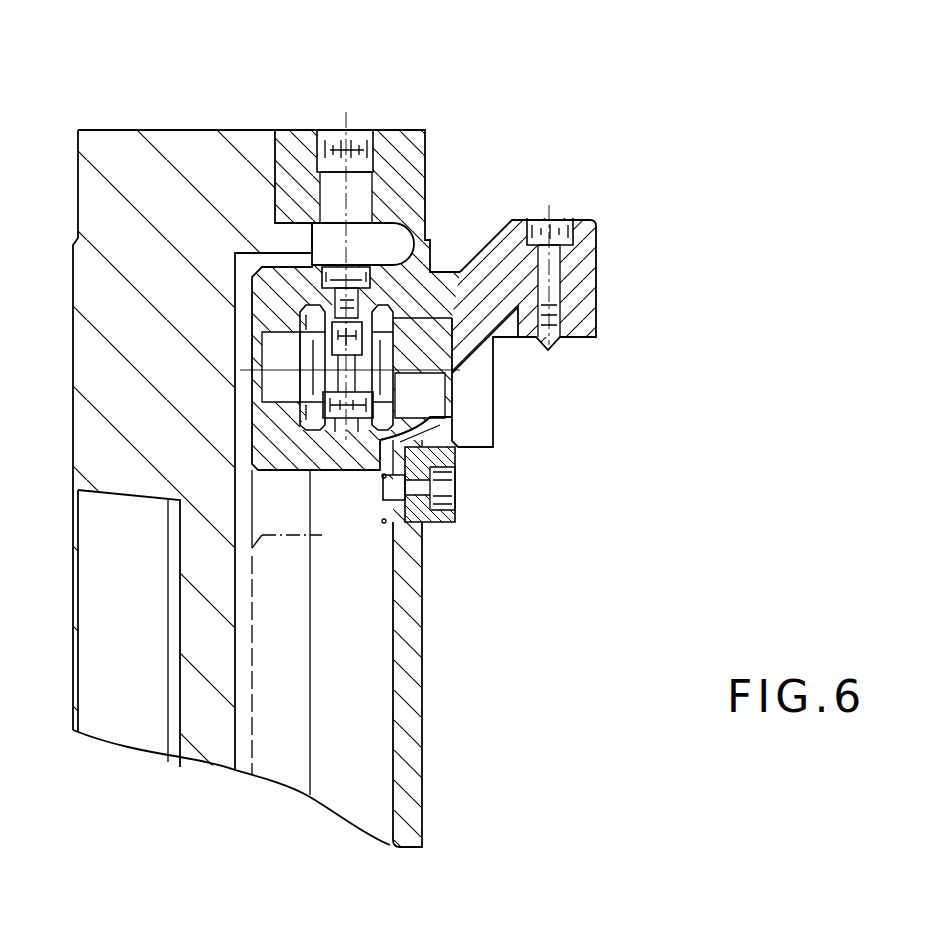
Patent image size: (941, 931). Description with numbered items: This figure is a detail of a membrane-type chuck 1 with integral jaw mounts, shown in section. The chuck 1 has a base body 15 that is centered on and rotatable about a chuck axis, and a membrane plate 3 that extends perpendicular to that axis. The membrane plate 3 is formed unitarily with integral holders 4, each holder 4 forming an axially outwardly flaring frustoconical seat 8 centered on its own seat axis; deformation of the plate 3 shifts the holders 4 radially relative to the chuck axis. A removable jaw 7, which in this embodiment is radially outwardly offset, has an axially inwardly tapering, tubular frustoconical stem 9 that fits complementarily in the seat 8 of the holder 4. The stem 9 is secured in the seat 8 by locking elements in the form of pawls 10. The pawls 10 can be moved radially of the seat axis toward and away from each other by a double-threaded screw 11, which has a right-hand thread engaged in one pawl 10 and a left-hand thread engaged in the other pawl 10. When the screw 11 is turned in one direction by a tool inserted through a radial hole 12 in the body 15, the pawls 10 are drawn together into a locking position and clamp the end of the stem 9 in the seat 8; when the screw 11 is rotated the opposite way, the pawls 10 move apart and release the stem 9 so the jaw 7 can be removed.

The chuck 1 is at (500, 590).
The membrane plate 3 is at (408, 712).
The holder 4 is at (322, 457).
The jaw 7 is at (468, 377).
The frustoconical seat 8 is at (445, 230).
The stem 9 is at (398, 437).
The pawl 10 is at (265, 330).
The double-threaded screw 11 is at (400, 299).
The radial hole 12 is at (352, 143).
The base body 15 is at (203, 722).